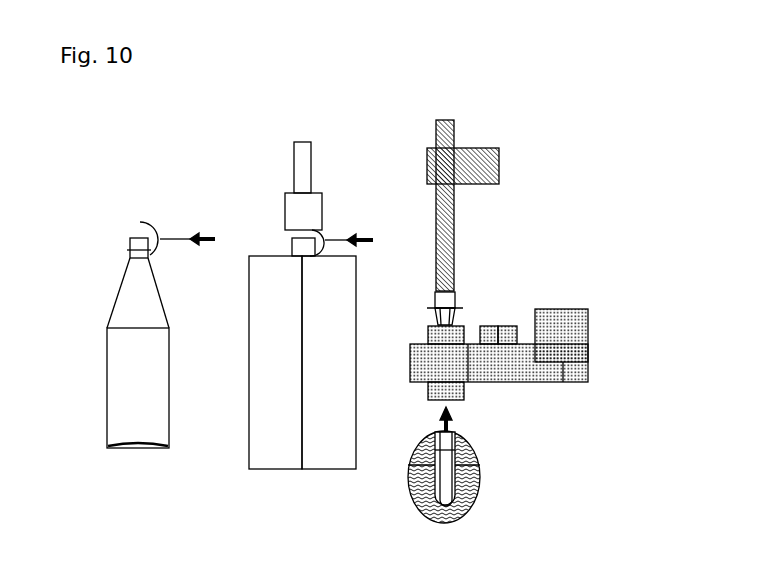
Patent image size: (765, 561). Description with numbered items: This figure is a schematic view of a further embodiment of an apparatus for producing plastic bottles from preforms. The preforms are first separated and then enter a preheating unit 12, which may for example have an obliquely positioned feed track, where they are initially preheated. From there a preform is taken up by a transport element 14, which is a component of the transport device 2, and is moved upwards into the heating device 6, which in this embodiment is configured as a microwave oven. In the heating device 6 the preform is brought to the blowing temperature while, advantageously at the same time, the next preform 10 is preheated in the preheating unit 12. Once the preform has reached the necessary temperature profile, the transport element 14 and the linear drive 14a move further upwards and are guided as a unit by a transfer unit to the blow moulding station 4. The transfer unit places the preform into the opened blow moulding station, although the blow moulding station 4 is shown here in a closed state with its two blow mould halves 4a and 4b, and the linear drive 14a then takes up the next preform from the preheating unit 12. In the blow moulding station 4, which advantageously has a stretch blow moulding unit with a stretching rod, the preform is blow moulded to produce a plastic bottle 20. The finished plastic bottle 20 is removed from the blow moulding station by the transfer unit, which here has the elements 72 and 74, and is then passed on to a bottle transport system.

The transport device 2 is at (518, 194).
The blow moulding station 4 is at (279, 333).
The blow mould half 4a is at (267, 408).
The blow mould half 4b is at (320, 402).
The heating device 6 is at (507, 370).
The preform 10 is at (445, 477).
The preheating unit 12 is at (478, 468).
The transport element 14 is at (443, 223).
The linear drive 14a is at (482, 168).
The plastic bottle 20 is at (123, 352).
The transfer unit element 72 is at (303, 165).
The transfer unit element 74 is at (302, 220).